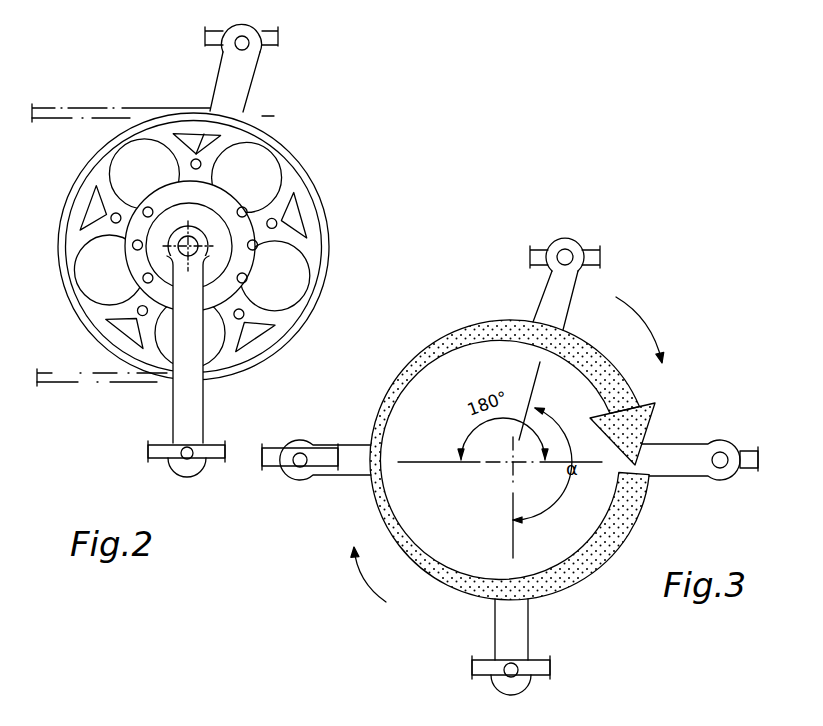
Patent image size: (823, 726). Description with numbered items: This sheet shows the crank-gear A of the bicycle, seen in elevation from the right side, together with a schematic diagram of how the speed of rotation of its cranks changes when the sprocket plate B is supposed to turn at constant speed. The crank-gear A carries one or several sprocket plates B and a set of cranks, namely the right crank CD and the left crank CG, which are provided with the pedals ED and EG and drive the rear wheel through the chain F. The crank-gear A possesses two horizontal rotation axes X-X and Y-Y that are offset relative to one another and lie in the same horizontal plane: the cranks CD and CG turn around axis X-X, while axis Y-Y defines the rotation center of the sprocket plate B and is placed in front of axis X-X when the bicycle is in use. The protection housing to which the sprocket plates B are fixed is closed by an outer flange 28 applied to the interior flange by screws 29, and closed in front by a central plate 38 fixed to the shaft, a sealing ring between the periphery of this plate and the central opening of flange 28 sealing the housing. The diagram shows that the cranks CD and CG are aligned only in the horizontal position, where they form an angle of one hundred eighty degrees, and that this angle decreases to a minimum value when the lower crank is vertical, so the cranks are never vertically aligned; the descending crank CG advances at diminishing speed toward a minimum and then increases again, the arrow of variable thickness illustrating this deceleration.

In FIG. 2, the left crank CG is at (222, 88).
In FIG. 3, the left crank CG is at (560, 292).
In FIG. 2, the right crank CD is at (183, 397).
In FIG. 3, the right crank CD is at (350, 465).
In FIG. 2, the left pedal EG is at (278, 38).
In FIG. 2, the right pedal ED is at (163, 452).
In FIG. 2, the chain F is at (55, 107).
In FIG. 2, the crank-gear A is at (285, 358).
In FIG. 2, the sprocket plate B is at (305, 190).
In FIG. 2, the outer flange 28 is at (222, 197).
In FIG. 2, the central plate 38 is at (217, 232).
In FIG. 2, the screws 29 is at (136, 242).
In FIG. 2, the rotation axis X-X is at (186, 247).
In FIG. 2, the rotation axis Y-Y is at (200, 256).